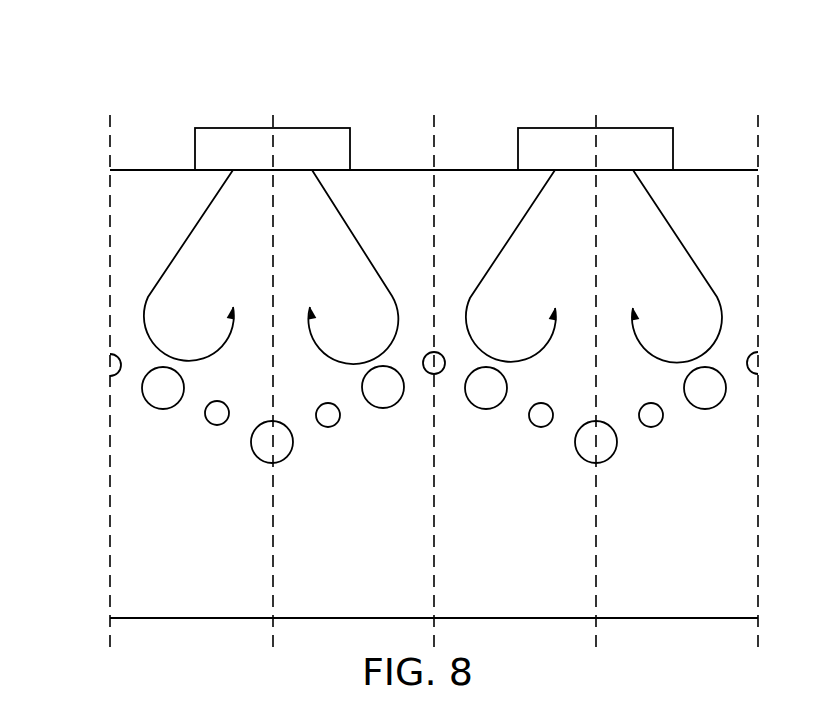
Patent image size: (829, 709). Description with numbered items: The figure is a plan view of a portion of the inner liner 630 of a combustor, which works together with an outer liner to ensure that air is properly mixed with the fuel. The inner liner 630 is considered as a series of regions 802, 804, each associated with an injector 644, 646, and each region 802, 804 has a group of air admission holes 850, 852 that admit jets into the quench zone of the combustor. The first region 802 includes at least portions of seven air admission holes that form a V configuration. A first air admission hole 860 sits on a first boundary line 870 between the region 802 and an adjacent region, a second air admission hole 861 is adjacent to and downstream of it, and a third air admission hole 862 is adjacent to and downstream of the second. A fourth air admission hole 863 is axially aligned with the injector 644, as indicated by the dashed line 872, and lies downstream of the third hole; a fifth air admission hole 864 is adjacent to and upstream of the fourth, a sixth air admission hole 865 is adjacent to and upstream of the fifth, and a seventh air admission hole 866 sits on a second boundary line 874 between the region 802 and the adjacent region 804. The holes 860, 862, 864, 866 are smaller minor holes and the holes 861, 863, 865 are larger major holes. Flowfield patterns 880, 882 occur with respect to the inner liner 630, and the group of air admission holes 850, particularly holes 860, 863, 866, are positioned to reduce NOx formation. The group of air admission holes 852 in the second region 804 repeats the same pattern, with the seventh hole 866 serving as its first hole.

The inner liner 630 is at (395, 358).
The injector 644 is at (222, 130).
The injector 646 is at (554, 128).
The region 802 is at (157, 177).
The region 804 is at (487, 174).
The first boundary line 870 is at (110, 233).
The dashed line 872 is at (273, 248).
The second boundary line 874 is at (434, 220).
The flowfield pattern 880 is at (178, 255).
The flowfield pattern 882 is at (515, 232).
The first air admission hole 860 is at (121, 364).
The seventh air admission hole 866 is at (445, 362).
The second air admission hole 861 is at (163, 409).
The third air admission hole 862 is at (217, 425).
The fourth air admission hole 863 is at (291, 456).
The fifth air admission hole 864 is at (330, 427).
The sixth air admission hole 865 is at (380, 409).
The group of air admission holes 850 is at (272, 472).
The group of air admission holes 852 is at (595, 457).